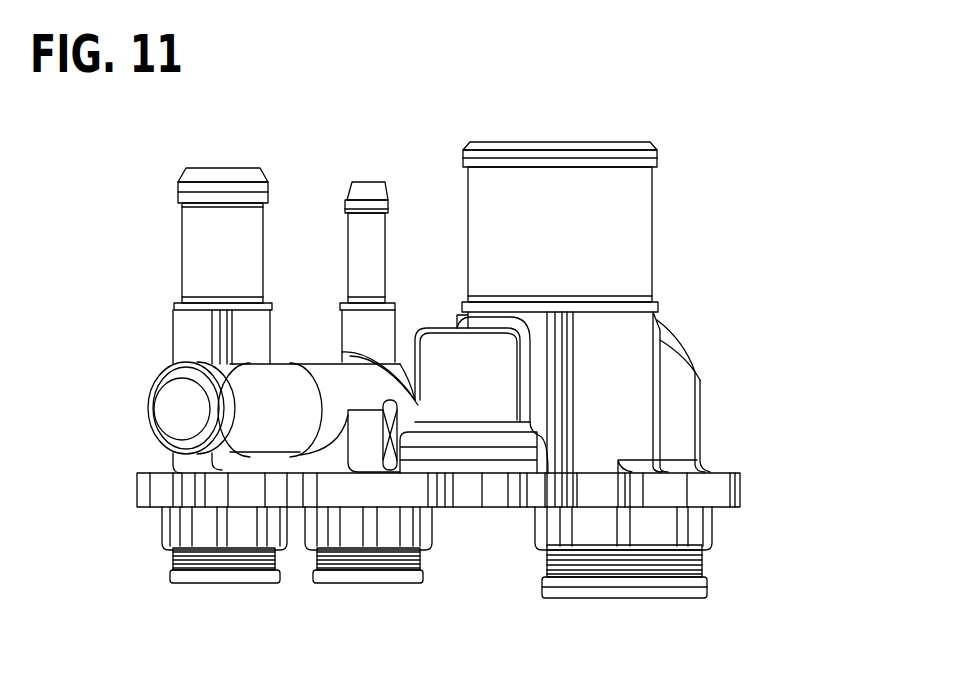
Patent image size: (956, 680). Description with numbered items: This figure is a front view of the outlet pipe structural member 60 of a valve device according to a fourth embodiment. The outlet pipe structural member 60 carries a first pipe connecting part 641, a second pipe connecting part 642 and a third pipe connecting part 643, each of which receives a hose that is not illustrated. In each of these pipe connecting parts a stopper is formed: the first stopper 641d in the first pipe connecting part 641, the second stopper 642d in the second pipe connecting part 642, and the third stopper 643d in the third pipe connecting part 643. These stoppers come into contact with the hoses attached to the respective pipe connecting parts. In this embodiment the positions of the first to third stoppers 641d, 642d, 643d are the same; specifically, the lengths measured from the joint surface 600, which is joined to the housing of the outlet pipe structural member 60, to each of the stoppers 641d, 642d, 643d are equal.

The outlet pipe structural member 60 is at (724, 360).
The joint surface 600 is at (490, 510).
The first pipe connecting part 641 is at (652, 195).
The first stopper 641d is at (660, 312).
The second pipe connecting part 642 is at (387, 220).
The second stopper 642d is at (345, 305).
The third pipe connecting part 643 is at (182, 218).
The third stopper 643d is at (172, 305).